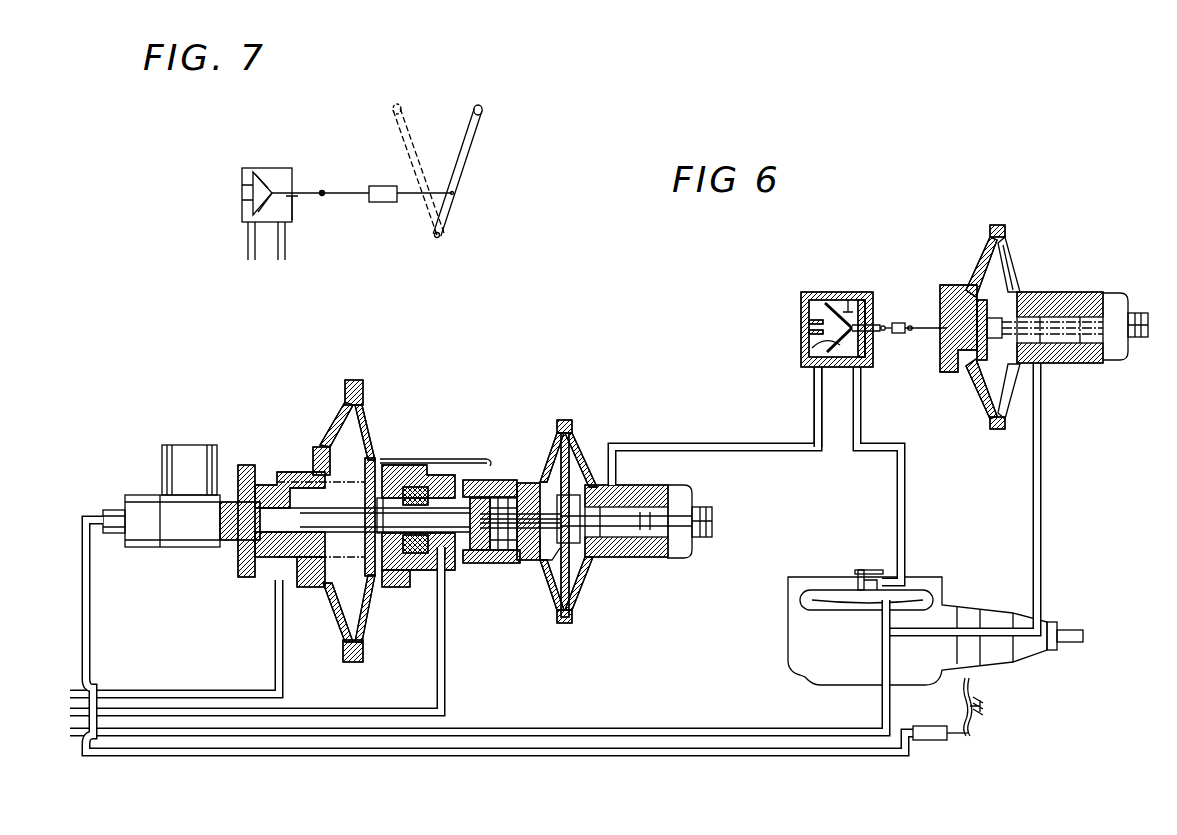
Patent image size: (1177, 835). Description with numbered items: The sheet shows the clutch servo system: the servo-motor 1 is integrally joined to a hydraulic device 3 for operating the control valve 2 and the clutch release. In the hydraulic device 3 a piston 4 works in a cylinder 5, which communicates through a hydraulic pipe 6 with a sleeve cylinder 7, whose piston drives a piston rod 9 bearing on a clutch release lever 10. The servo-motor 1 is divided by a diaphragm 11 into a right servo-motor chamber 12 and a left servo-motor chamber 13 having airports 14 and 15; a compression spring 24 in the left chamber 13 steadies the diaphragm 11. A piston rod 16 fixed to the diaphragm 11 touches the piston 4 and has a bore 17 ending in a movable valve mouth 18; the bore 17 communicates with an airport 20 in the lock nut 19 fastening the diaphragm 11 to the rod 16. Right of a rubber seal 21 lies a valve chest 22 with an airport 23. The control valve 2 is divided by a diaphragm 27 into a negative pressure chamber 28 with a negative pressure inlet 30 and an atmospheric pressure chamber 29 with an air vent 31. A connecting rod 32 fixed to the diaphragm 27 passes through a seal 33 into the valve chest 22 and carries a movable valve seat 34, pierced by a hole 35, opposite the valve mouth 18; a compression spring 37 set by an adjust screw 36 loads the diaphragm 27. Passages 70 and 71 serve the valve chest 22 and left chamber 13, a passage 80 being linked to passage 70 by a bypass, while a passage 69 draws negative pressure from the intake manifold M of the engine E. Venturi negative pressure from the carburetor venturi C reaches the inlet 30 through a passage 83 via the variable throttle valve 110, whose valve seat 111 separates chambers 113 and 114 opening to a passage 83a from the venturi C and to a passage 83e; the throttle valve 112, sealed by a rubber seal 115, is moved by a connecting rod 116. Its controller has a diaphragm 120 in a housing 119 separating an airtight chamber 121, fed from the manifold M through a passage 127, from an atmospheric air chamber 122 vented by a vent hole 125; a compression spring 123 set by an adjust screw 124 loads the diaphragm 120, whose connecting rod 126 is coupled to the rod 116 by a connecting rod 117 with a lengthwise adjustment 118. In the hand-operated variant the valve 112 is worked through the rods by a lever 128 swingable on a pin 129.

In FIG. 6, the servo-motor 1 is at (343, 652).
In FIG. 6, the control valve 2 is at (565, 623).
In FIG. 6, the hydraulic device 3 is at (140, 547).
In FIG. 6, the piston 4 is at (245, 555).
In FIG. 6, the cylinder 5 is at (225, 540).
In FIG. 6, the hydraulic pipe 6 is at (90, 620).
In FIG. 6, the sleeve cylinder 7 is at (935, 726).
In FIG. 6, the piston rod 9 is at (958, 740).
In FIG. 6, the clutch release lever 10 is at (972, 690).
In FIG. 6, the diaphragm 11 is at (366, 625).
In FIG. 6, the right servo-motor chamber 12 is at (392, 588).
In FIG. 6, the left servo-motor chamber 13 is at (337, 612).
In FIG. 6, the airport 14 is at (366, 455).
In FIG. 6, the airport 15 is at (297, 582).
In FIG. 6, the piston rod 16 is at (262, 488).
In FIG. 6, the bore 17 is at (418, 553).
In FIG. 6, the movable valve mouth 18 is at (478, 550).
In FIG. 6, the lock nut 19 is at (376, 560).
In FIG. 6, the airport 20 is at (398, 466).
In FIG. 6, the rubber seal 21 is at (420, 486).
In FIG. 6, the valve chest 22 is at (525, 560).
In FIG. 6, the airport 23 is at (437, 575).
In FIG. 6, the compression spring 24 is at (330, 447).
In FIG. 6, the diaphragm 27 is at (575, 588).
In FIG. 6, the negative pressure chamber 28 is at (583, 467).
In FIG. 6, the atmospheric pressure chamber 29 is at (553, 590).
In FIG. 6, the negative pressure inlet 30 is at (620, 488).
In FIG. 6, the air vent 31 is at (540, 562).
In FIG. 6, the connecting rod 32 is at (503, 510).
In FIG. 6, the seal 33 is at (525, 483).
In FIG. 6, the movable valve seat 34 is at (500, 550).
In FIG. 6, the hole 35 is at (482, 480).
In FIG. 6, the adjust screw 36 is at (700, 540).
In FIG. 6, the compression spring 37 is at (640, 545).
In FIG. 6, the passage 69 is at (588, 732).
In FIG. 6, the passage 70 is at (255, 629).
In FIG. 6, the passage 71 is at (237, 693).
In FIG. 6, the passage 80 is at (460, 459).
In FIG. 6, the passage 83 is at (752, 445).
In FIG. 7, the passage 83a is at (285, 255).
In FIG. 6, the passage 83a is at (860, 396).
In FIG. 7, the conduit branch 83e is at (248, 240).
In FIG. 6, the conduit branch 83e is at (815, 392).
In FIG. 7, the variable throttle valve 110 is at (243, 170).
In FIG. 6, the variable throttle valve 110 is at (801, 316).
In FIG. 7, the valve seat 111 is at (262, 172).
In FIG. 6, the valve seat 111 is at (838, 300).
In FIG. 7, the throttle valve 112 is at (258, 205).
In FIG. 6, the throttle valve 112 is at (809, 350).
In FIG. 7, the chamber 113 is at (275, 178).
In FIG. 6, the chamber 113 is at (850, 300).
In FIG. 7, the chamber 114 is at (243, 190).
In FIG. 6, the chamber 114 is at (801, 300).
In FIG. 7, the rubber seal 115 is at (290, 193).
In FIG. 6, the rubber seal 115 is at (870, 300).
In FIG. 7, the connecting rod 116 is at (305, 196).
In FIG. 6, the connecting rod 116 is at (883, 333).
In FIG. 7, the connecting rod 117 is at (346, 192).
In FIG. 6, the connecting rod 117 is at (914, 333).
In FIG. 7, the adjustable portion 118 is at (382, 202).
In FIG. 6, the adjustable portion 118 is at (899, 323).
In FIG. 6, the housing 119 is at (995, 429).
In FIG. 6, the diaphragm 120 is at (975, 280).
In FIG. 6, the airtight chamber 121 is at (1008, 272).
In FIG. 6, the atmospheric air chamber 122 is at (982, 390).
In FIG. 6, the compression spring 123 is at (1050, 317).
In FIG. 6, the adjust screw 124 is at (1133, 355).
In FIG. 6, the vent hole 125 is at (965, 368).
In FIG. 6, the connecting rod 126 is at (928, 320).
In FIG. 6, the passage 127 is at (1045, 448).
In FIG. 7, the lever 128 is at (474, 145).
In FIG. 7, the pin 129 is at (440, 236).
In FIG. 6, the carburetor venturi C is at (865, 570).
In FIG. 6, the engine E is at (788, 635).
In FIG. 6, the intake manifold M is at (915, 590).